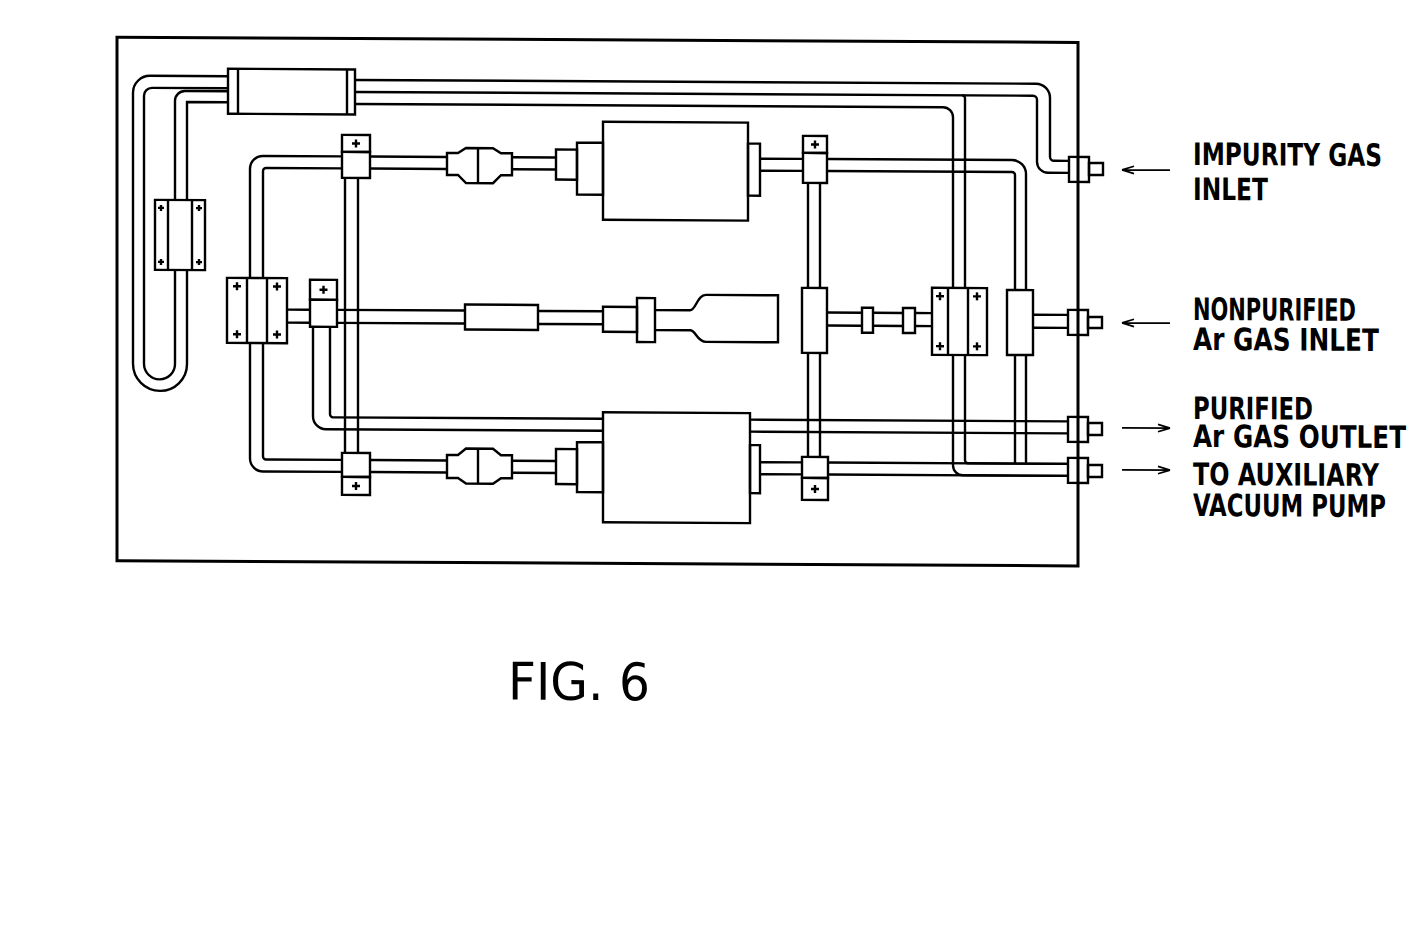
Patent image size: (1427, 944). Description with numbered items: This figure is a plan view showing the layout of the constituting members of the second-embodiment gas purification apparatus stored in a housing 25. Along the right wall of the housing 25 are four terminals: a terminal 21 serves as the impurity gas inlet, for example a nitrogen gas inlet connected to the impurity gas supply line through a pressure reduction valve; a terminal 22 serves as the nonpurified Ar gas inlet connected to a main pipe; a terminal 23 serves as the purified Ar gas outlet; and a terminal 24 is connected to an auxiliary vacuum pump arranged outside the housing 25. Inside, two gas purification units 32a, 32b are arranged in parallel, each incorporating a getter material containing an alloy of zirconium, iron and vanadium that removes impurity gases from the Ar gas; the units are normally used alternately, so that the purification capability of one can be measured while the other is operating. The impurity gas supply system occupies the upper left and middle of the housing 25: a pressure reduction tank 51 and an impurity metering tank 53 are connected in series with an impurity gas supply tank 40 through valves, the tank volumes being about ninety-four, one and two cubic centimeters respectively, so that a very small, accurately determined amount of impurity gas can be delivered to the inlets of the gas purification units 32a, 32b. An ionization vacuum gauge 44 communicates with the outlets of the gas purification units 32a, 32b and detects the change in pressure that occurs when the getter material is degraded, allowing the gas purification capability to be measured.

The terminal 21 is at (1095, 149).
The terminal 22 is at (1094, 303).
The terminal 23 is at (1094, 409).
The terminal 24 is at (1094, 494).
The housing 25 is at (437, 558).
The gas purification unit 32a is at (632, 218).
The gas purification unit 32b is at (632, 408).
The impurity gas supply tank 40 is at (888, 327).
The ionization vacuum gauge 44 is at (727, 338).
The pressure reduction tank 51 is at (257, 110).
The impurity metering tank 53 is at (198, 197).